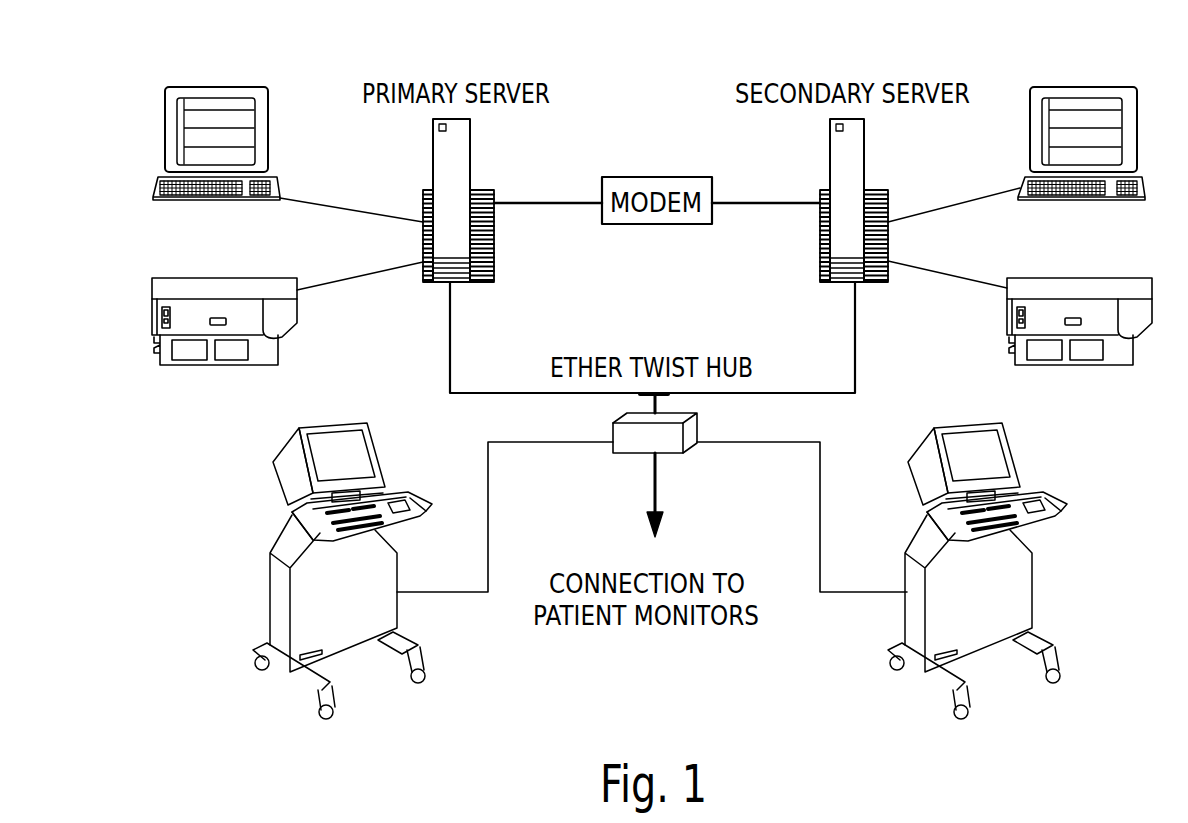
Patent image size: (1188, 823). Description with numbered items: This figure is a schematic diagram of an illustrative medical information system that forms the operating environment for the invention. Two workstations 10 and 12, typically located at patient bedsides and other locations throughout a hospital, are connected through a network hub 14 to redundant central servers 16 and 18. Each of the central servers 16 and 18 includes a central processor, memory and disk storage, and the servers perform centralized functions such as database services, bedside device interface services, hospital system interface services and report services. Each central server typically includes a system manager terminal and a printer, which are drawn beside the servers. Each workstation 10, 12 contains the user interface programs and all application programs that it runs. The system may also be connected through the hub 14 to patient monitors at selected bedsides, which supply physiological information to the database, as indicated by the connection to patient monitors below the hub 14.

The workstation 10 is at (264, 487).
The workstation 12 is at (1088, 517).
The network hub 14 is at (670, 455).
The central server 16 is at (471, 150).
The central server 18 is at (830, 142).